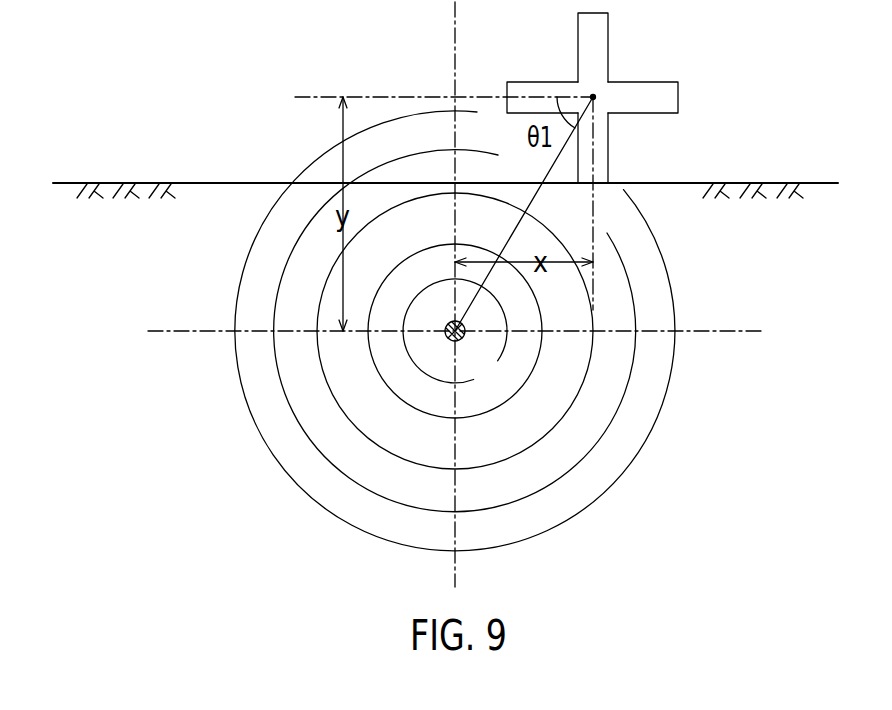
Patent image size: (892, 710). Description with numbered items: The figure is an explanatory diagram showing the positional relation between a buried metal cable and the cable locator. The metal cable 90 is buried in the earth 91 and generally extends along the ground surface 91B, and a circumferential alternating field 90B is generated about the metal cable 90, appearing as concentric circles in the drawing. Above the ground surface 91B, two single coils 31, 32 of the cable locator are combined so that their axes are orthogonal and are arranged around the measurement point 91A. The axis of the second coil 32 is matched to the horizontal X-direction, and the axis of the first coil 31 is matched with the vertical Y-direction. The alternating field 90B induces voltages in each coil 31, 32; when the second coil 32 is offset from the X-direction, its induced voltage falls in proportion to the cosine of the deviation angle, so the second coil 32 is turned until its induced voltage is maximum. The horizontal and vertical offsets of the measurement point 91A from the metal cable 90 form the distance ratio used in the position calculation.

The first coil 31 is at (662, 100).
The second coil 32 is at (593, 35).
The metal cable 90 is at (458, 338).
The circumferential alternating field 90B is at (575, 402).
The earth 91 is at (216, 210).
The measurement point 91A is at (593, 97).
The ground surface 91B is at (110, 183).